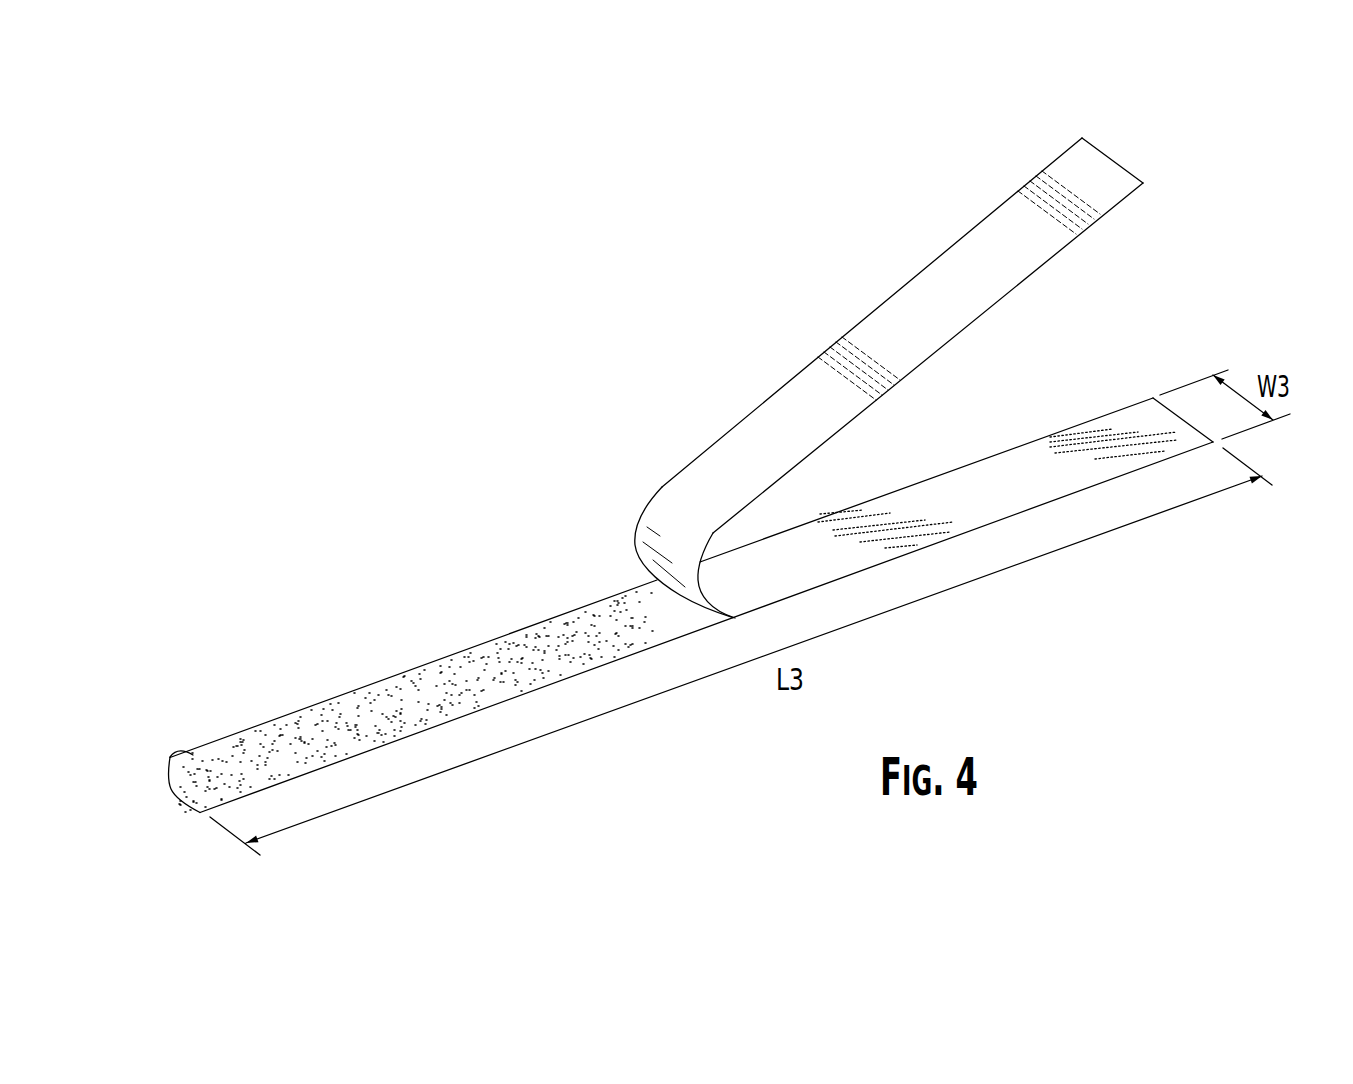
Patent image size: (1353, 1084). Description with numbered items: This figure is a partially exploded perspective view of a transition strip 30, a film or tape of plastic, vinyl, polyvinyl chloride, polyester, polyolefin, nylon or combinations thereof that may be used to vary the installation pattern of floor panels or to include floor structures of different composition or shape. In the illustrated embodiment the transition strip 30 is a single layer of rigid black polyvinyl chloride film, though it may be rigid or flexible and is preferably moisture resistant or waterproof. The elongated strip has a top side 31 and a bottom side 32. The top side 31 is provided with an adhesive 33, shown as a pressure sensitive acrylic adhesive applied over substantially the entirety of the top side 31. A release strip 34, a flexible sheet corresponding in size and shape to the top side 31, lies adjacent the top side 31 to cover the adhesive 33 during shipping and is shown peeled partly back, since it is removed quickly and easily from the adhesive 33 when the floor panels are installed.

The transition strip 30 is at (443, 312).
The top side 31 is at (480, 643).
The bottom side 32 is at (172, 755).
The adhesive 33 is at (307, 727).
The release strip 34 is at (850, 322).